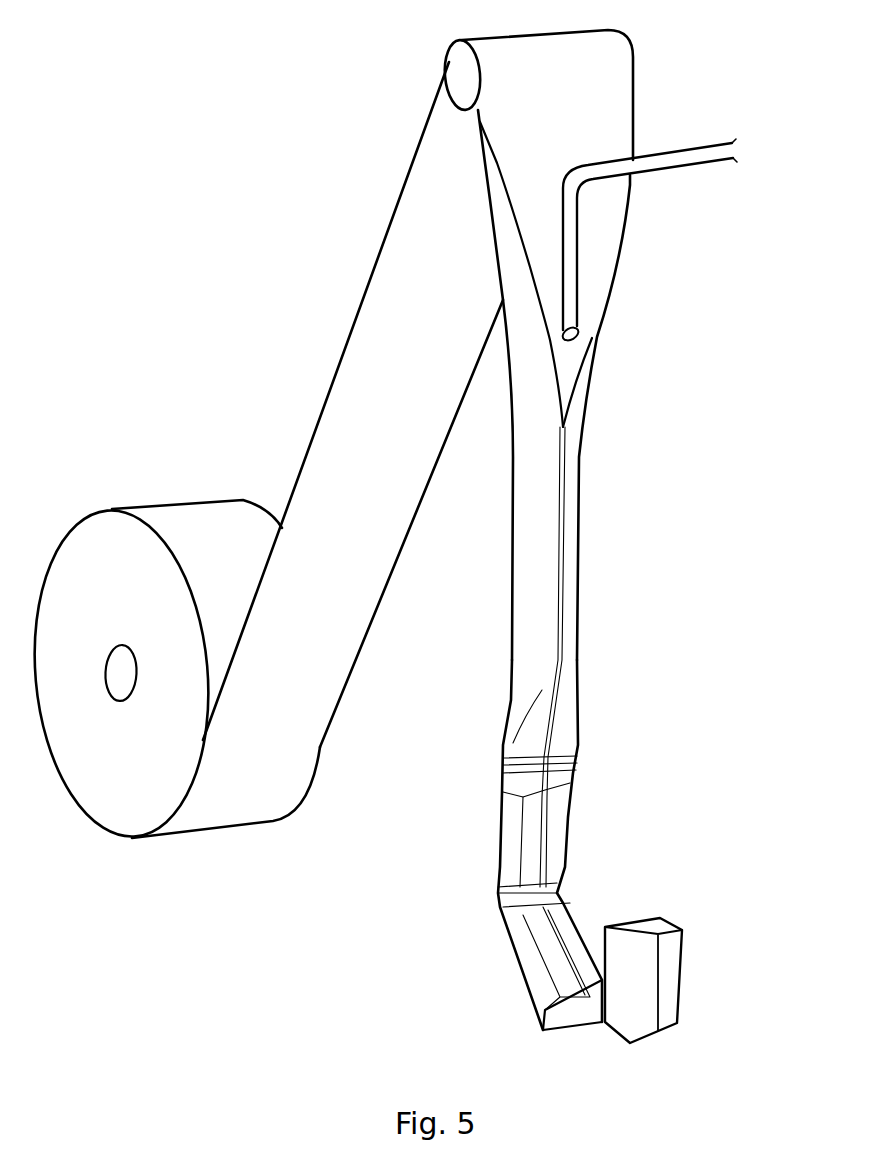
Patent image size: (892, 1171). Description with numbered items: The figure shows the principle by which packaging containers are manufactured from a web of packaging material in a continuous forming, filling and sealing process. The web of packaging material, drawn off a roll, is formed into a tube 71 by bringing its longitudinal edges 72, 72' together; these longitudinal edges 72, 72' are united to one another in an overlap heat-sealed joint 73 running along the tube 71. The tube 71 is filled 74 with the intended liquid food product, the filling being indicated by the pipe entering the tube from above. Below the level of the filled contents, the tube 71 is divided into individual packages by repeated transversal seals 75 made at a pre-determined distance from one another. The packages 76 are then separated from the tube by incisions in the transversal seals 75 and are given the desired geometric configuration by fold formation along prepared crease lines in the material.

The tube 71 is at (537, 530).
The longitudinal edge 72 is at (651, 274).
The longitudinal edge 72' is at (641, 334).
The overlap heat-sealed joint 73 is at (563, 463).
The filling 74 is at (683, 150).
The transversal seal 75 is at (572, 773).
The package 76 is at (670, 977).